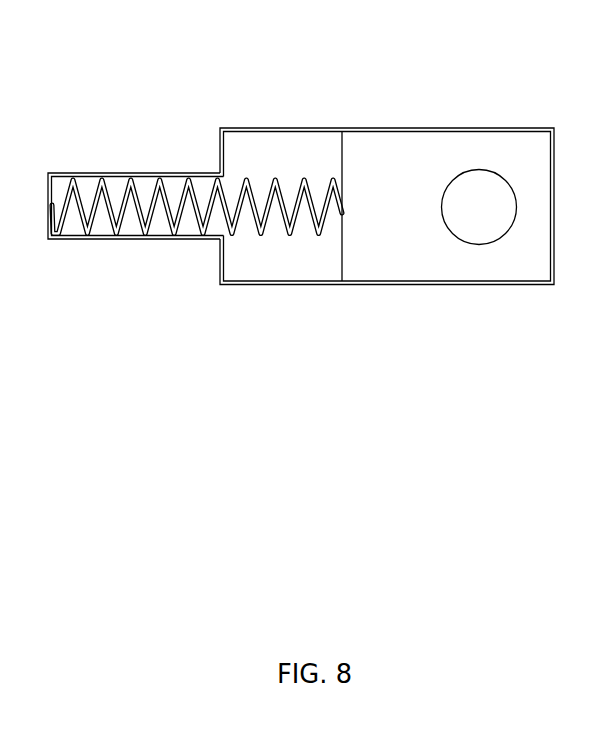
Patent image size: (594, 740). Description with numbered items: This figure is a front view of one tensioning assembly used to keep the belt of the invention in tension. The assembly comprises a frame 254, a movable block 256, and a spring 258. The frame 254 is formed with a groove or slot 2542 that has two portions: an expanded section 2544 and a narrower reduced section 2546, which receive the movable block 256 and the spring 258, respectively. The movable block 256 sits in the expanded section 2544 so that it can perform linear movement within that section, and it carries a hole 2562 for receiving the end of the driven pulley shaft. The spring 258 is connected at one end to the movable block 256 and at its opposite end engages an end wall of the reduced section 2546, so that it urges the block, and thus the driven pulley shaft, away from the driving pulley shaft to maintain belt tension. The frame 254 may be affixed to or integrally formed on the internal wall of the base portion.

The frame 254 is at (290, 127).
The slot 2542 is at (250, 242).
The expanded section 2544 is at (317, 262).
The reduced section 2546 is at (130, 225).
The movable block 256 is at (460, 240).
The hole 2562 is at (466, 220).
The spring 258 is at (172, 202).